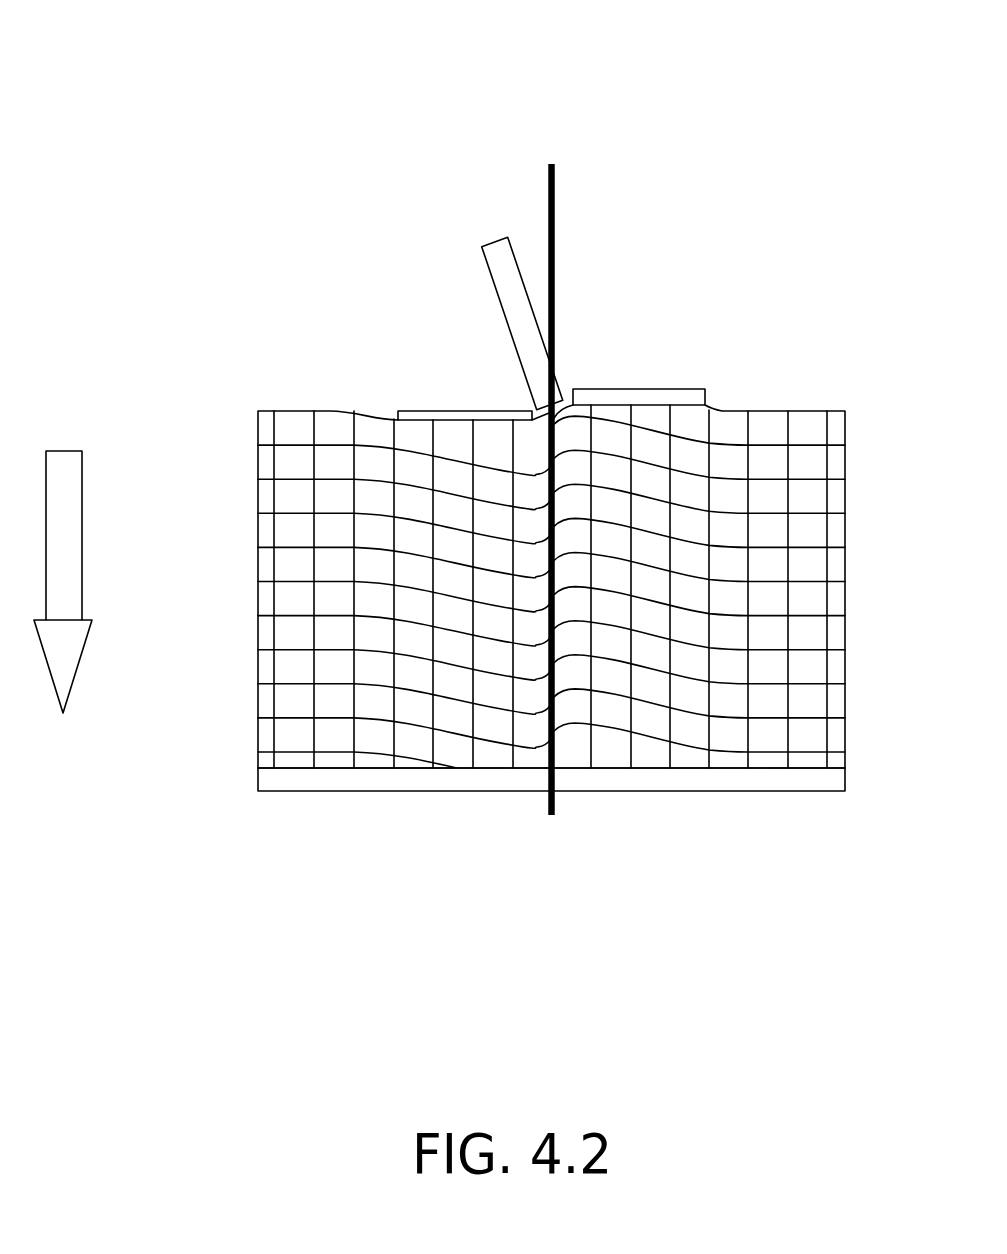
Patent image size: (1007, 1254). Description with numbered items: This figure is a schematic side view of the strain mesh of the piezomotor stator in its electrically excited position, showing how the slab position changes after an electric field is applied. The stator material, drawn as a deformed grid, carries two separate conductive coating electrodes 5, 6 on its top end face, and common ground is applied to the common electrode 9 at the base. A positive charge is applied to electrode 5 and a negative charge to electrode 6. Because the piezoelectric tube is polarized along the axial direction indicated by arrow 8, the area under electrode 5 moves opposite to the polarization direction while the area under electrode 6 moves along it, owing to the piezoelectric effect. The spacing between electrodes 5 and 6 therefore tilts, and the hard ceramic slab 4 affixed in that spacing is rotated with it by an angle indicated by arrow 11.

The slab 4 is at (502, 301).
The electrode 5 is at (669, 390).
The electrode 6 is at (412, 410).
The axial direction 8 is at (63, 505).
The common electrode 9 is at (703, 786).
The angle 11 is at (548, 197).